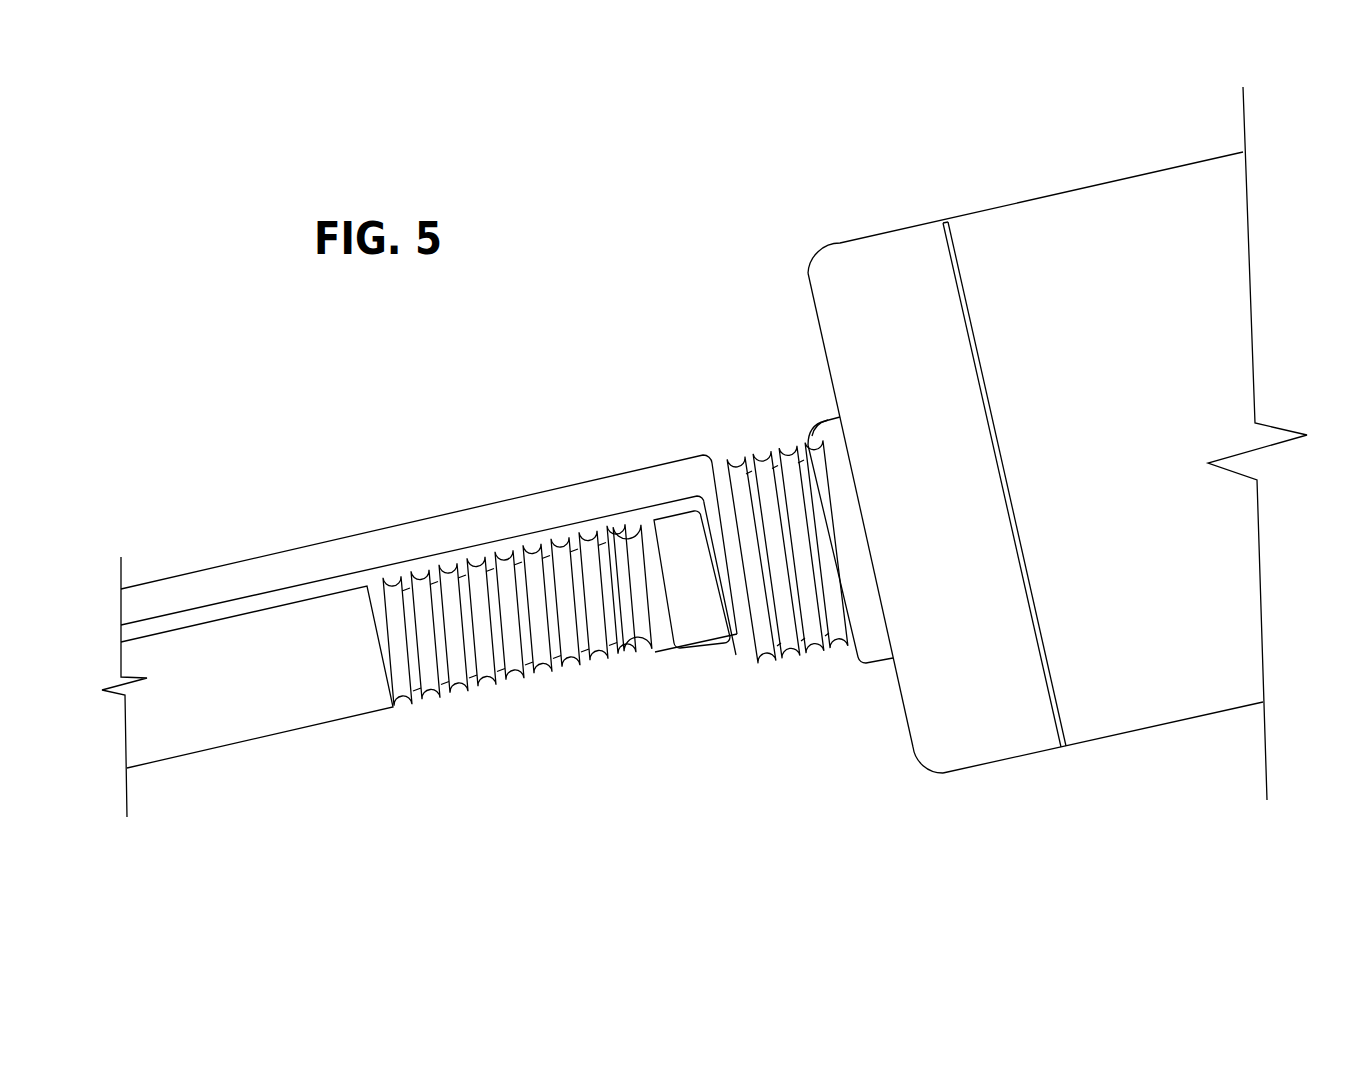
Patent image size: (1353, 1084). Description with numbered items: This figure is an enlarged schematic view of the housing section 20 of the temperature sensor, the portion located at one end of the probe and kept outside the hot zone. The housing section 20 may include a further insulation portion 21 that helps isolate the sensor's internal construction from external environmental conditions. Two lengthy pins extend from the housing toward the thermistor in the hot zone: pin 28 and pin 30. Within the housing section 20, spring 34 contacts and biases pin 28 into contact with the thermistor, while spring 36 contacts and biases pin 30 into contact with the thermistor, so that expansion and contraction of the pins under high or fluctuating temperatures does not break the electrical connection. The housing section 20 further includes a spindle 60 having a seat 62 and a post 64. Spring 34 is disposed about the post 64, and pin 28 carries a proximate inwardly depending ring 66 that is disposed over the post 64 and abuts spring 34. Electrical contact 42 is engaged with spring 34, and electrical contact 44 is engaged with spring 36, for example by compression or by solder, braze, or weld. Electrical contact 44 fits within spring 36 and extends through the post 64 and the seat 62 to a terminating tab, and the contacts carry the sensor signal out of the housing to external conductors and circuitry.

The housing section 20 is at (829, 168).
The insulation portion 21 is at (1137, 707).
The pin 28 is at (557, 499).
The pin 30 is at (277, 710).
The spring 34 is at (788, 446).
The spring 36 is at (458, 693).
The electrical contact 42 is at (821, 427).
The electrical contact 44 is at (643, 623).
The spindle 60 is at (987, 732).
The seat 62 is at (902, 697).
The post 64 is at (747, 463).
The inwardly depending ring 66 is at (745, 643).